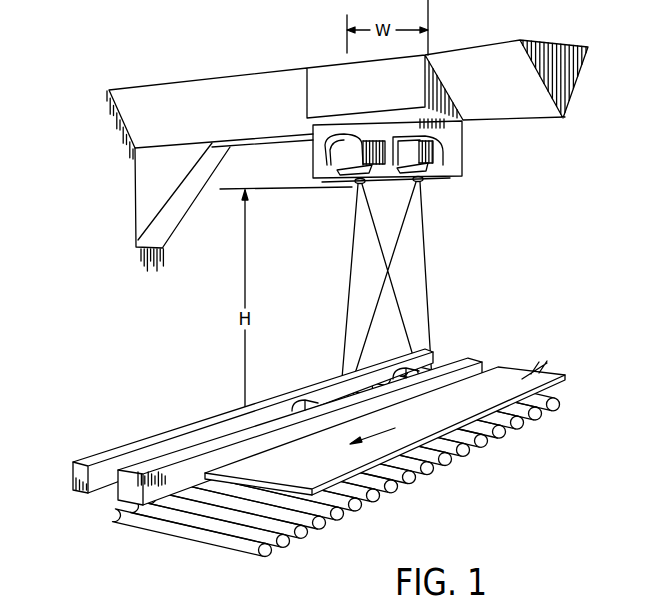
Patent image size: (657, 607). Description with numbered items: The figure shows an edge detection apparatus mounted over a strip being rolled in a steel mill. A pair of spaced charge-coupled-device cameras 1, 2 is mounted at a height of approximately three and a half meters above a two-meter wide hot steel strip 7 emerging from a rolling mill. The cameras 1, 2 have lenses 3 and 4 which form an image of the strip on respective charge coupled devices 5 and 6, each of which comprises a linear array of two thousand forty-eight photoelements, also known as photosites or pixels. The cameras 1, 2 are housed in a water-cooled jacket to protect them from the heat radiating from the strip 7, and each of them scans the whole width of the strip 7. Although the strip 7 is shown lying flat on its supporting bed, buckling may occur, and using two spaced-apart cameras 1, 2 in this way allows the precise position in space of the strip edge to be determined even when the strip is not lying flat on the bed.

The charge-coupled-device camera 1 is at (445, 152).
The charge-coupled-device camera 2 is at (343, 152).
The lens 3 is at (425, 181).
The lens 4 is at (358, 184).
The charge coupled device 5 is at (462, 176).
The charge coupled device 6 is at (346, 171).
The hot steel strip 7 is at (400, 443).